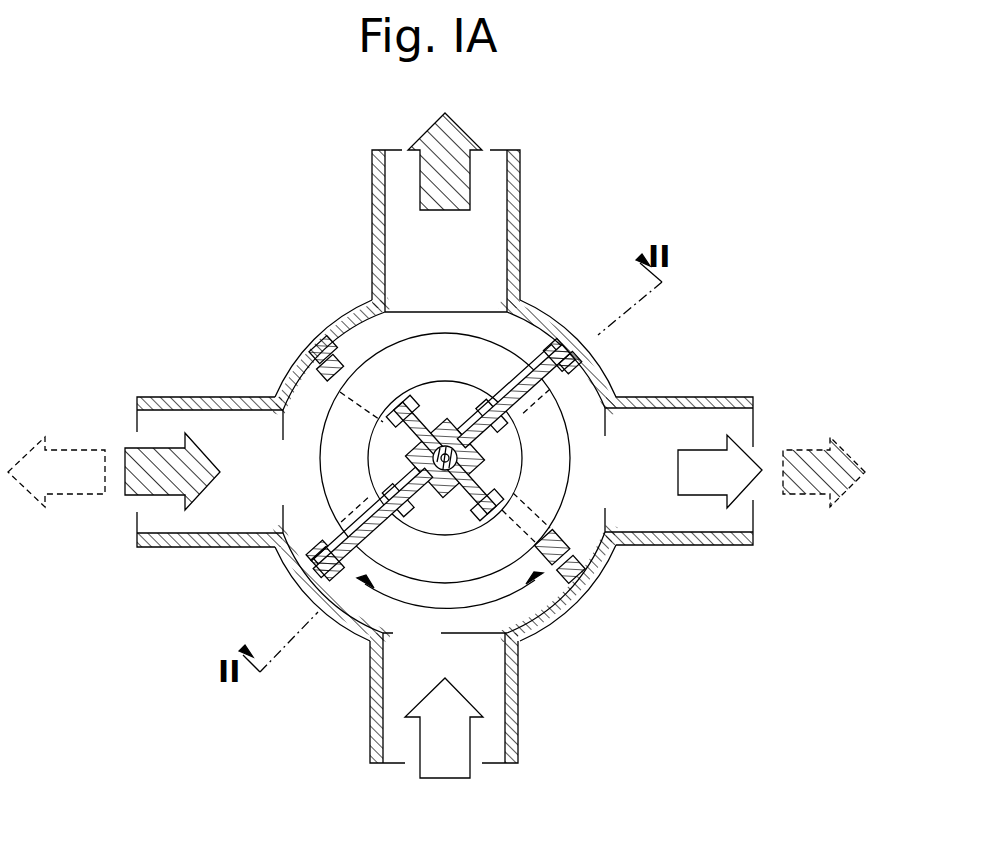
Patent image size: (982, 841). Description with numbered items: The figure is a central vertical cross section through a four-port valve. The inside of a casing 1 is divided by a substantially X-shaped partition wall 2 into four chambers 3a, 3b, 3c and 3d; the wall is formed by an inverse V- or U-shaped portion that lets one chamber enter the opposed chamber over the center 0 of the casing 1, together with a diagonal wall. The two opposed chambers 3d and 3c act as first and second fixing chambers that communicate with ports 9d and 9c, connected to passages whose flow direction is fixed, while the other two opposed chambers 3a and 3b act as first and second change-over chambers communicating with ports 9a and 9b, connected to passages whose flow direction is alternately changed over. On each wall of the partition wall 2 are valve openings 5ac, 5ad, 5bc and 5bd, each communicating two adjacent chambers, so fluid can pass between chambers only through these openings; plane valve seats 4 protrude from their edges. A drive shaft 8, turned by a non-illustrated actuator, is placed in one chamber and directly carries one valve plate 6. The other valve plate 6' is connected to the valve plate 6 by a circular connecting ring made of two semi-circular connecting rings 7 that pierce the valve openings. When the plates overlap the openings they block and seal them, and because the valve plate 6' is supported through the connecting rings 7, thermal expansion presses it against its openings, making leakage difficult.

The casing 1 is at (560, 620).
The partition wall 2 is at (418, 402).
The chamber 3a is at (312, 450).
The chamber 3b is at (618, 455).
The chamber 3c is at (442, 306).
The chamber 3d is at (432, 654).
The plane valve seat 4 is at (325, 347).
The valve opening 5ac is at (322, 370).
The valve opening 5ad is at (296, 546).
The valve opening 5bc is at (590, 368).
The valve opening 5bd is at (598, 552).
The valve plate 6 is at (361, 561).
The valve plate 6' is at (528, 366).
The semi-circular connecting ring 7 is at (330, 478).
The drive shaft 8 is at (452, 470).
The center of the casing 0 is at (520, 332).
The port 9a is at (170, 420).
The port 9b is at (702, 422).
The port 9c is at (498, 176).
The port 9d is at (495, 688).